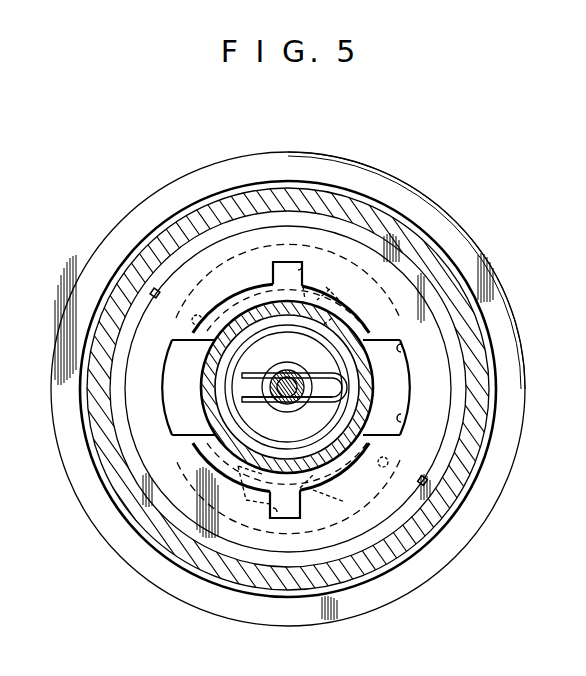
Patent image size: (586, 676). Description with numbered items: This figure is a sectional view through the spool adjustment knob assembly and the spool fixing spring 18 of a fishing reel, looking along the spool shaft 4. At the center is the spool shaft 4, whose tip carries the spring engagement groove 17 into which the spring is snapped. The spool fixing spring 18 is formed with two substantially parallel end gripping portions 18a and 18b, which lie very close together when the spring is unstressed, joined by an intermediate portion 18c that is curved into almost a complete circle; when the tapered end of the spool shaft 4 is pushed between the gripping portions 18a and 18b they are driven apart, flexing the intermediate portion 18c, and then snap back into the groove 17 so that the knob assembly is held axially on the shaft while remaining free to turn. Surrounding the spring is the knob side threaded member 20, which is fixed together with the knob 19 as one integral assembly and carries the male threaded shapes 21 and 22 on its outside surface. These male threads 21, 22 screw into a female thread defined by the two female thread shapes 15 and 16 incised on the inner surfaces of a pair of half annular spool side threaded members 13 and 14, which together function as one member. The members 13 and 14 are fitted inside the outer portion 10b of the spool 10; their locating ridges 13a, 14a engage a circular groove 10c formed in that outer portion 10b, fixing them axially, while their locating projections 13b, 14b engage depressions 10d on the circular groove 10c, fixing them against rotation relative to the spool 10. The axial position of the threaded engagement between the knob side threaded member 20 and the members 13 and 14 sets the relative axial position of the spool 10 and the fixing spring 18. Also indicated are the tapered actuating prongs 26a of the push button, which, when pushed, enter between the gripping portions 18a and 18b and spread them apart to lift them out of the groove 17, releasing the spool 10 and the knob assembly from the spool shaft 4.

The spool shaft 4 is at (290, 396).
The spool 10 is at (190, 505).
The outer portion of the spool 10b is at (403, 416).
The circular groove 10c is at (388, 458).
The depressions 10d is at (277, 517).
The spool side threaded member 13 is at (243, 290).
The locating ridge 13a is at (206, 316).
The locating projection 13b is at (275, 262).
The spool side threaded member 14 is at (345, 480).
The locating ridge 14a is at (340, 483).
The locating projection 14b is at (300, 513).
The female thread 15 is at (370, 306).
The female thread 16 is at (242, 502).
The spring engagement groove 17 is at (312, 386).
The spool fixing spring 18 is at (206, 374).
The end gripping portion 18a is at (247, 374).
The end gripping portion 18b is at (252, 402).
The intermediate portion 18c is at (240, 398).
The knob 19 is at (188, 552).
The knob side threaded member 20 is at (332, 318).
The male threaded shape 21 is at (330, 289).
The male threaded shape 22 is at (318, 493).
The tapered actuating prongs 26a is at (212, 411).